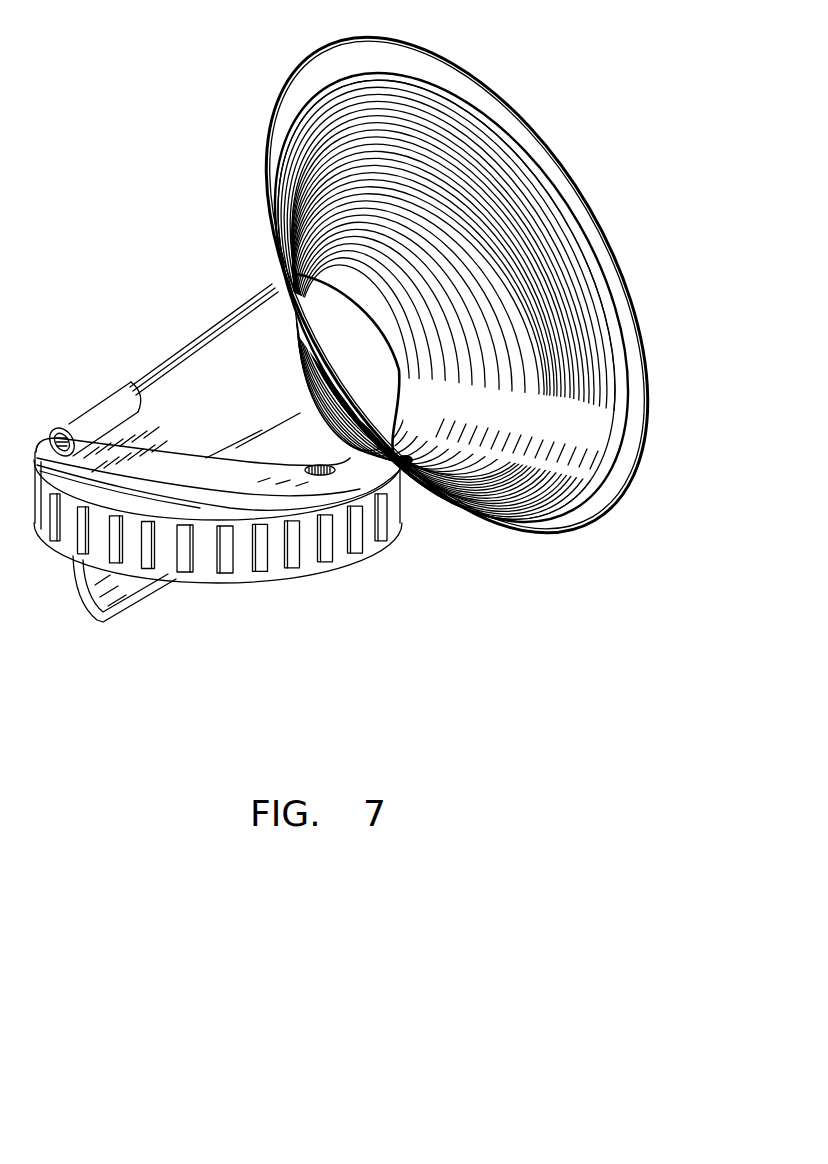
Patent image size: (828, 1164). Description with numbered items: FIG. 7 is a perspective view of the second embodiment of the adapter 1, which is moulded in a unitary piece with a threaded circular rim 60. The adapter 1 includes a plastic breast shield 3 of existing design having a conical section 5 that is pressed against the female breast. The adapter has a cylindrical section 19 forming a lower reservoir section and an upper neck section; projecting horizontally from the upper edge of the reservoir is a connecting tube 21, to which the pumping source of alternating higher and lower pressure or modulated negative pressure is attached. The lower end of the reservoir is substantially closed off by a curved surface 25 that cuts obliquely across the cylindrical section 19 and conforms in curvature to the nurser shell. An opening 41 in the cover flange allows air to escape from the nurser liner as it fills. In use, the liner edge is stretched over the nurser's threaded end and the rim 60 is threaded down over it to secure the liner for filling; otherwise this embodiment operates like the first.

The adapter 1 is at (190, 306).
The breast shield 3 is at (561, 153).
The conical section 5 is at (518, 418).
The cylindrical section 19 is at (247, 421).
The connecting tube 21 is at (87, 420).
The curved surface 25 is at (73, 562).
The opening 41 is at (336, 470).
The threaded circular rim 60 is at (372, 534).